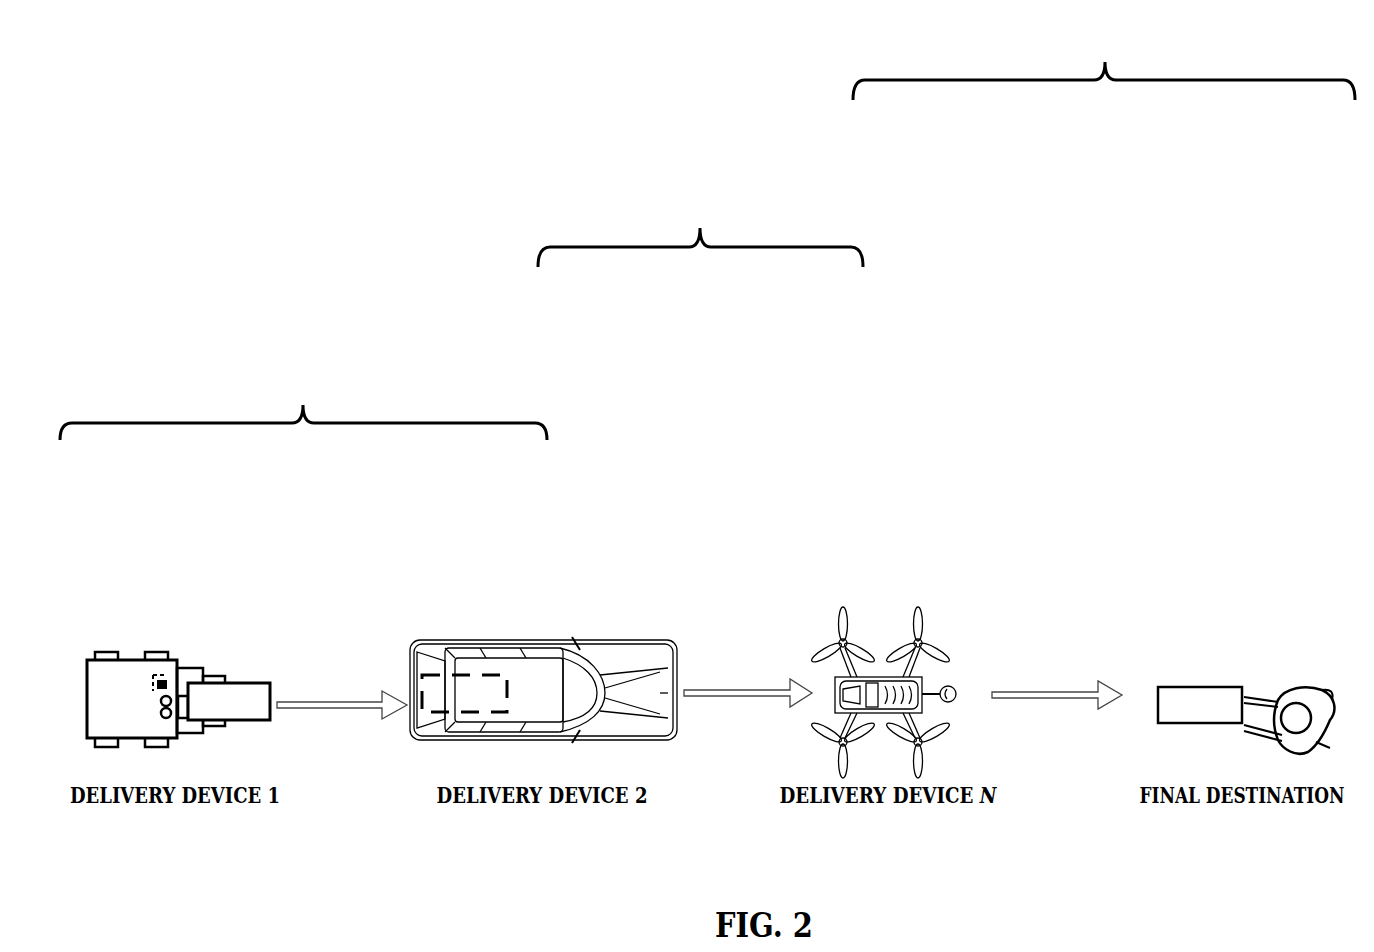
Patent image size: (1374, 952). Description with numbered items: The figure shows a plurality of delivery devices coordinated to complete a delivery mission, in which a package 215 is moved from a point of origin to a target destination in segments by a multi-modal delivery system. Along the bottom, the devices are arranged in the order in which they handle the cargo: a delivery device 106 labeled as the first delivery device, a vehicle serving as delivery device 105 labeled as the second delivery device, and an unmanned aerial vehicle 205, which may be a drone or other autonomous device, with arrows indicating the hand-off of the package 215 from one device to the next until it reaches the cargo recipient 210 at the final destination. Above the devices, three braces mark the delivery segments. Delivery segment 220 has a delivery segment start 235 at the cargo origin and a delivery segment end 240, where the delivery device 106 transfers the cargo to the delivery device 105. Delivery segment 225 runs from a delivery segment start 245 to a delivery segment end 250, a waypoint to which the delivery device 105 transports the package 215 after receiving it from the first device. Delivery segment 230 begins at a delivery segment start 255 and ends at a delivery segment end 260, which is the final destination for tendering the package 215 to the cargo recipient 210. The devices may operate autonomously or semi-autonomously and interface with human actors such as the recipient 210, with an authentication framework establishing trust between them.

The delivery device 2 105 is at (538, 650).
The delivery device 1 106 is at (138, 657).
The unmanned aerial vehicle 205 is at (847, 608).
The cargo recipient 210 is at (1308, 688).
The package 215 is at (272, 686).
The delivery segment 1 220 is at (303, 393).
The delivery segment 2 225 is at (700, 223).
The delivery segment 3 230 is at (1104, 58).
The delivery segment start 235 is at (109, 463).
The delivery segment end 240 is at (545, 479).
The delivery segment start 245 is at (544, 300).
The delivery segment end 250 is at (858, 295).
The delivery segment start 255 is at (853, 139).
The delivery segment end 260 is at (1317, 124).